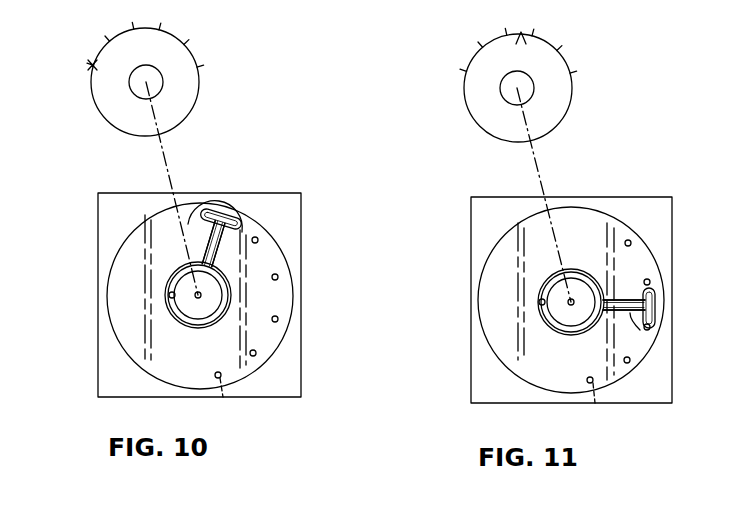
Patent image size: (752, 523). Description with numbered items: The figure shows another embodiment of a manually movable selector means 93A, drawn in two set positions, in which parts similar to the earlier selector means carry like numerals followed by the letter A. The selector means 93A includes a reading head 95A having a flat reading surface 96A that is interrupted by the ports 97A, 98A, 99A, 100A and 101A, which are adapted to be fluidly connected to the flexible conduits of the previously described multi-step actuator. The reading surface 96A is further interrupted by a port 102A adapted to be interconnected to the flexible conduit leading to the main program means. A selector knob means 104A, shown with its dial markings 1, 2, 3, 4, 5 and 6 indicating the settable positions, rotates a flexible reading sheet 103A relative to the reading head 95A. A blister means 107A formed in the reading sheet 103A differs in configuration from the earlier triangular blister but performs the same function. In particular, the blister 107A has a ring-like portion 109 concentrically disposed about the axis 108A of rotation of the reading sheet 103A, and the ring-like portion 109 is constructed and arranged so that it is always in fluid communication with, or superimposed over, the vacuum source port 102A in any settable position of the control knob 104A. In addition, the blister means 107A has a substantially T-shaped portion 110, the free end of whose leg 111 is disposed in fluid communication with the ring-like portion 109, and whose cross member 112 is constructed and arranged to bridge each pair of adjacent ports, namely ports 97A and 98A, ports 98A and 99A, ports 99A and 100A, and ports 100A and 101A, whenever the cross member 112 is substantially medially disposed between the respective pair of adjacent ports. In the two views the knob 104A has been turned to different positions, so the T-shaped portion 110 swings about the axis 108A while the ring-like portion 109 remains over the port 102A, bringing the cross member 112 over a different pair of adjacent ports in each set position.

In FIG. 10, the dial position 1 is at (85, 65).
In FIG. 11, the dial position 1 is at (455, 70).
In FIG. 10, the dial position 2 is at (100, 35).
In FIG. 11, the dial position 2 is at (471, 41).
In FIG. 10, the dial position 3 is at (130, 17).
In FIG. 11, the dial position 3 is at (501, 23).
In FIG. 10, the dial position 4 is at (164, 17).
In FIG. 11, the dial position 4 is at (535, 24).
In FIG. 10, the dial position 5 is at (193, 35).
In FIG. 11, the dial position 5 is at (565, 41).
In FIG. 10, the dial position 6 is at (209, 65).
In FIG. 11, the dial position 6 is at (581, 72).
In FIG. 10, the selector means 93A is at (276, 109).
In FIG. 11, the selector means 93A is at (629, 131).
In FIG. 10, the reading head 95A is at (118, 191).
In FIG. 11, the reading head 95A is at (490, 197).
In FIG. 10, the flat reading surface 96A is at (115, 216).
In FIG. 11, the flat reading surface 96A is at (482, 217).
In FIG. 10, the port 97A is at (259, 240).
In FIG. 11, the port 97A is at (631, 242).
In FIG. 10, the port 98A is at (279, 277).
In FIG. 11, the port 98A is at (651, 282).
In FIG. 10, the port 99A is at (279, 319).
In FIG. 11, the port 99A is at (651, 326).
In FIG. 10, the port 100A is at (257, 353).
In FIG. 11, the port 100A is at (628, 364).
In FIG. 10, the port 101A is at (196, 396).
In FIG. 11, the port 101A is at (573, 404).
In FIG. 10, the vacuum source port 102A is at (172, 299).
In FIG. 11, the vacuum source port 102A is at (541, 306).
In FIG. 10, the flexible reading sheet 103A is at (107, 302).
In FIG. 11, the flexible reading sheet 103A is at (478, 298).
In FIG. 10, the selector knob means 104A is at (105, 97).
In FIG. 11, the selector knob means 104A is at (477, 98).
In FIG. 10, the blister means 107A is at (199, 210).
In FIG. 11, the blister means 107A is at (632, 299).
In FIG. 10, the axis of rotation 108A is at (201, 295).
In FIG. 11, the axis of rotation 108A is at (571, 302).
In FIG. 10, the ring-like portion 109 is at (208, 327).
In FIG. 11, the ring-like portion 109 is at (581, 335).
In FIG. 10, the T-shaped portion 110 is at (232, 234).
In FIG. 11, the T-shaped portion 110 is at (630, 313).
In FIG. 10, the leg 111 is at (205, 254).
In FIG. 11, the leg 111 is at (617, 299).
In FIG. 10, the cross member 112 is at (230, 217).
In FIG. 11, the cross member 112 is at (655, 300).